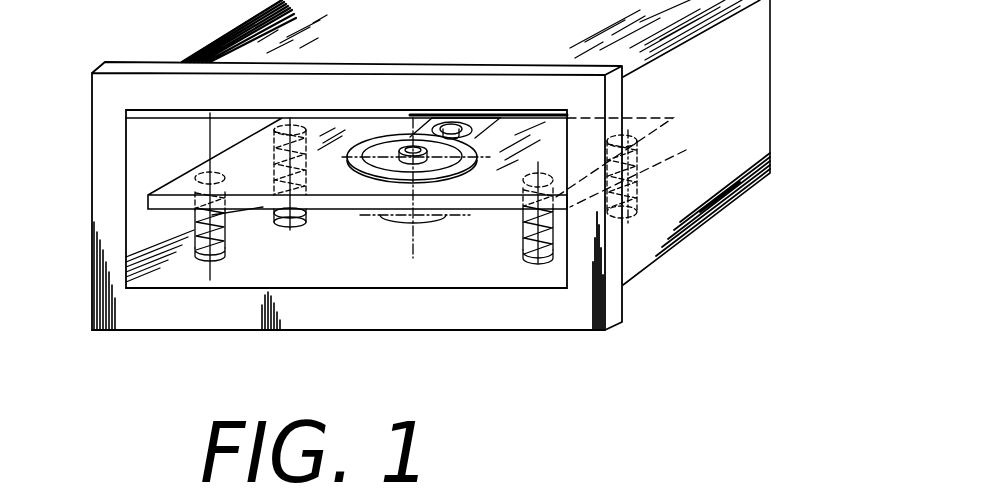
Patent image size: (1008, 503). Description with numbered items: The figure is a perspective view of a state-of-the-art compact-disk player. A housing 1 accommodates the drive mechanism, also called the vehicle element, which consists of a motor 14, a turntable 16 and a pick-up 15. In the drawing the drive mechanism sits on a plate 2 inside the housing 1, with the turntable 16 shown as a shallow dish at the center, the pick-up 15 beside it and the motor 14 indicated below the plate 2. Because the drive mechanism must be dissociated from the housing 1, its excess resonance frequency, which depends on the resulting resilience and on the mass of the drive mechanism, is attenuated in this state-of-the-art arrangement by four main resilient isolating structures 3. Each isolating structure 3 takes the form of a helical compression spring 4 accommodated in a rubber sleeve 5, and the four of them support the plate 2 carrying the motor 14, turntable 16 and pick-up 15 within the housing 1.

The housing 1 is at (640, 254).
The base plate 2 is at (228, 163).
The main resilient isolating structure 3 is at (200, 263).
The helical compression spring 4 is at (200, 231).
The rubber sleeve 5 is at (196, 186).
The motor 14 is at (428, 228).
The pick-up 15 is at (472, 112).
The turntable 16 is at (389, 148).